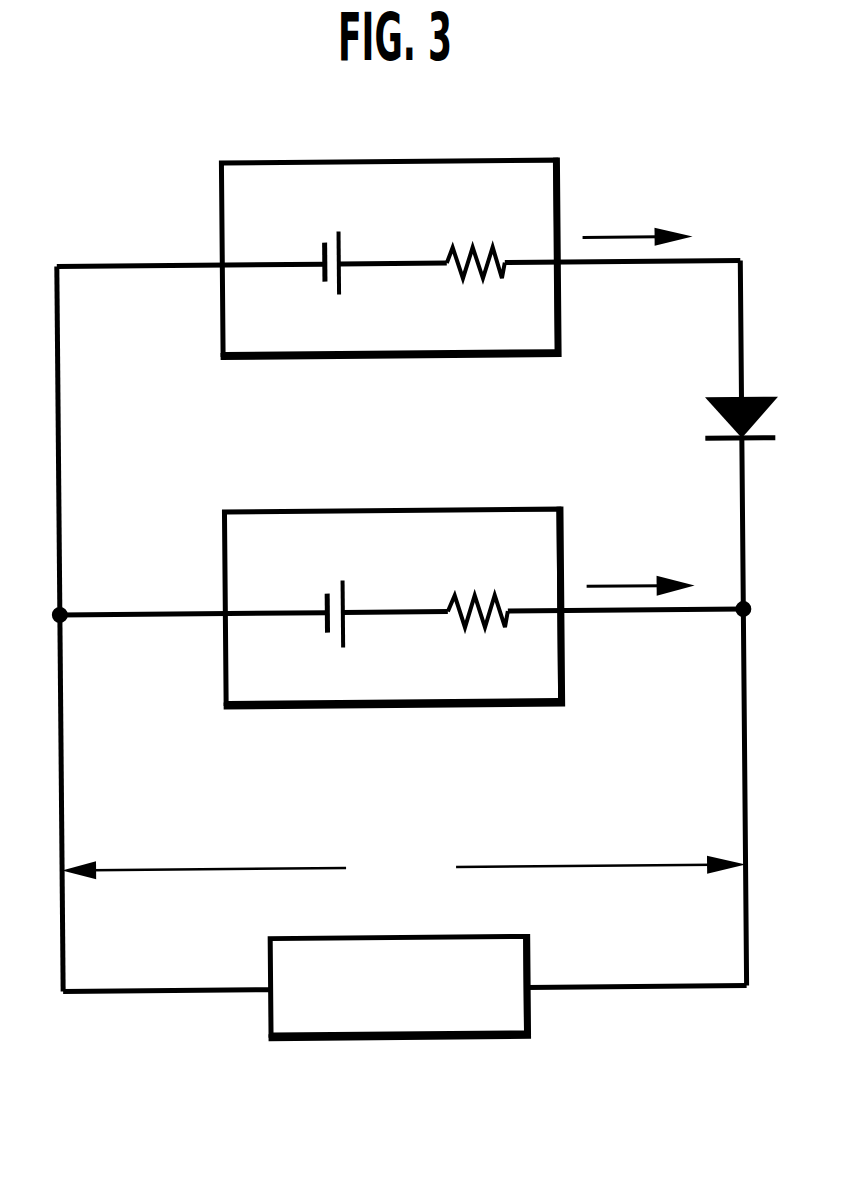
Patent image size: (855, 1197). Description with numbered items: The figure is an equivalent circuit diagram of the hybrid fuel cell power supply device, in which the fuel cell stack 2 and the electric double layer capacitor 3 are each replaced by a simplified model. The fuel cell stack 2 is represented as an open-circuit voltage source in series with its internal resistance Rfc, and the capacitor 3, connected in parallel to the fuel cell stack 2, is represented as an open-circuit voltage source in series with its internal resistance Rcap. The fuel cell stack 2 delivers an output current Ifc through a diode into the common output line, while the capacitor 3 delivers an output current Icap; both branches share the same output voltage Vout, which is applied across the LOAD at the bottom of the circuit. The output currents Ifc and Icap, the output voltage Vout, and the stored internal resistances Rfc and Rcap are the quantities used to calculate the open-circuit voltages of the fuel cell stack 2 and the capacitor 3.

The fuel cell stack 2 is at (388, 224).
The electric double layer capacitor 3 is at (391, 574).
The internal resistance of the fuel cell stack Rfc is at (475, 228).
The internal resistance of the capacitor Rcap is at (478, 576).
The output current of the fuel cell stack Ifc is at (637, 212).
The output current of the capacitor Icap is at (640, 561).
The output voltage Vout is at (404, 865).
The load LOAD is at (398, 986).